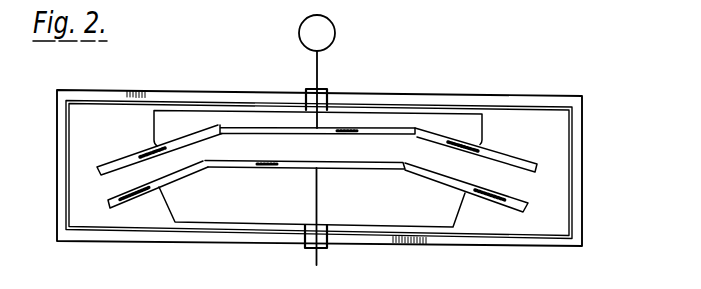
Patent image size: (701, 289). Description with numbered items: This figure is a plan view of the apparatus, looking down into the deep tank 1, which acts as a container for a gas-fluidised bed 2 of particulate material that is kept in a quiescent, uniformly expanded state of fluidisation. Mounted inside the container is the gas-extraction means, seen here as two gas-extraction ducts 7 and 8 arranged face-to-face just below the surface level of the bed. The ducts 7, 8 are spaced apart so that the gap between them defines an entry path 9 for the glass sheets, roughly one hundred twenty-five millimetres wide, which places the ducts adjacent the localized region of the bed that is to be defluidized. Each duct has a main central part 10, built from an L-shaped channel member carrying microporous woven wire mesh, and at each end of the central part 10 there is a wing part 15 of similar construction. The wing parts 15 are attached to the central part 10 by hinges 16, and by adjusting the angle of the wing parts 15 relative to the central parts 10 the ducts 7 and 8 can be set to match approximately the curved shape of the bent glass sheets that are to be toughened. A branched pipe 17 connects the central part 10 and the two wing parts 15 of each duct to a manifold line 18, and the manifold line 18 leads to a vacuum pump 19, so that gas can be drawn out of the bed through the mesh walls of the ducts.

The deep tank 1 is at (575, 172).
The gas-fluidised bed 2 is at (550, 137).
The gas-extraction duct 7 is at (376, 124).
The gas-extraction duct 8 is at (364, 176).
The entry path 9 is at (387, 152).
The central part 10 is at (242, 122).
The wing part 15 is at (123, 158).
The hinge 16 is at (221, 128).
The branched pipe 17 is at (328, 90).
The manifold line 18 is at (315, 68).
The vacuum pump 19 is at (331, 34).